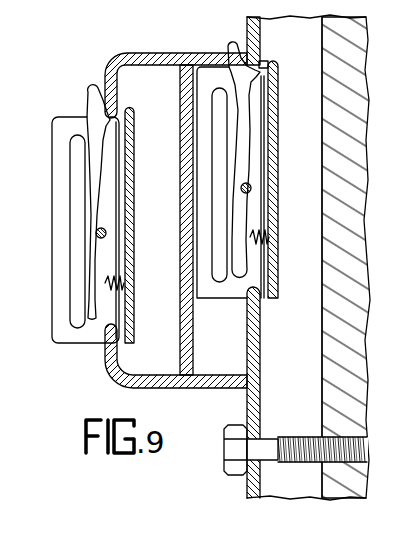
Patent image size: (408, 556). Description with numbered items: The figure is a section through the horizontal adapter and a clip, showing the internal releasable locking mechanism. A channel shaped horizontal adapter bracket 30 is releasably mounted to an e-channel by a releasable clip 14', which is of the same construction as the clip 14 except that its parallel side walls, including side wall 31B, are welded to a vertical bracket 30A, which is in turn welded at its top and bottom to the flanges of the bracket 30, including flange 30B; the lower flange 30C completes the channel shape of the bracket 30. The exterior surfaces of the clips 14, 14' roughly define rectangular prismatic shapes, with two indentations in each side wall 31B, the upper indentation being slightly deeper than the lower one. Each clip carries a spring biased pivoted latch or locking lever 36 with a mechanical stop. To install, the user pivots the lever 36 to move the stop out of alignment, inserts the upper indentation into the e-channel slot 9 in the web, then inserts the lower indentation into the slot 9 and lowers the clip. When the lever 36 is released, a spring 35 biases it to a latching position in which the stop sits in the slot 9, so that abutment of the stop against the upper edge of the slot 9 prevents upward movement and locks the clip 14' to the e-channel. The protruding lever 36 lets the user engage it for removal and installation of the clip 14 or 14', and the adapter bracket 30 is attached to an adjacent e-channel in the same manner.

The e-channel slot 9 is at (279, 90).
The clip 14 is at (125, 230).
The releasable clip 14' is at (253, 182).
The horizontal adapter bracket 30 is at (166, 227).
The vertical bracket 30A is at (178, 110).
The flange 30B is at (128, 53).
The channel lower flange 30C is at (187, 391).
The side wall 31B is at (55, 252).
The spring 35 is at (270, 235).
The locking lever 36 is at (88, 87).